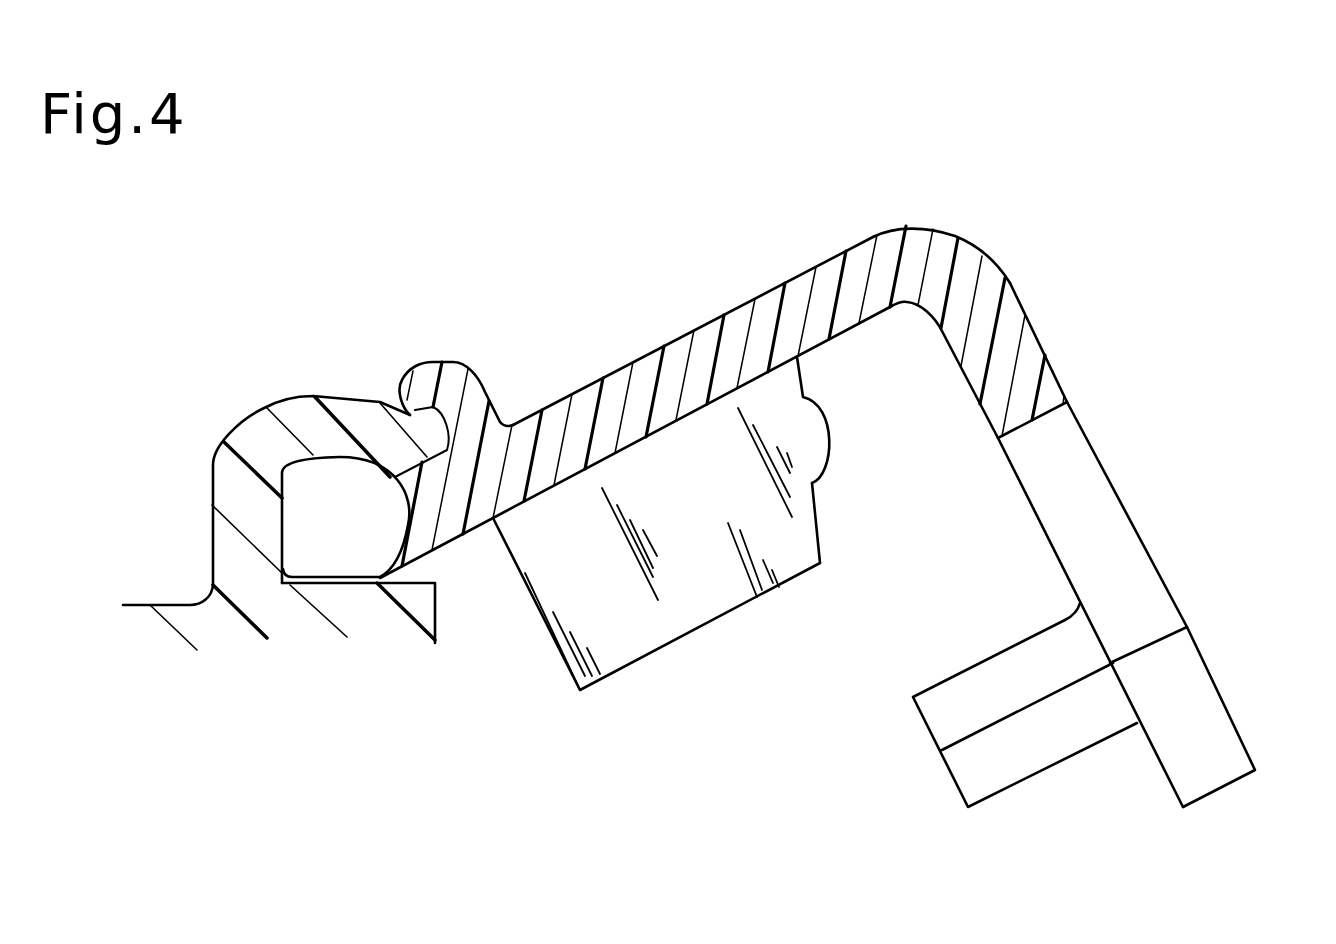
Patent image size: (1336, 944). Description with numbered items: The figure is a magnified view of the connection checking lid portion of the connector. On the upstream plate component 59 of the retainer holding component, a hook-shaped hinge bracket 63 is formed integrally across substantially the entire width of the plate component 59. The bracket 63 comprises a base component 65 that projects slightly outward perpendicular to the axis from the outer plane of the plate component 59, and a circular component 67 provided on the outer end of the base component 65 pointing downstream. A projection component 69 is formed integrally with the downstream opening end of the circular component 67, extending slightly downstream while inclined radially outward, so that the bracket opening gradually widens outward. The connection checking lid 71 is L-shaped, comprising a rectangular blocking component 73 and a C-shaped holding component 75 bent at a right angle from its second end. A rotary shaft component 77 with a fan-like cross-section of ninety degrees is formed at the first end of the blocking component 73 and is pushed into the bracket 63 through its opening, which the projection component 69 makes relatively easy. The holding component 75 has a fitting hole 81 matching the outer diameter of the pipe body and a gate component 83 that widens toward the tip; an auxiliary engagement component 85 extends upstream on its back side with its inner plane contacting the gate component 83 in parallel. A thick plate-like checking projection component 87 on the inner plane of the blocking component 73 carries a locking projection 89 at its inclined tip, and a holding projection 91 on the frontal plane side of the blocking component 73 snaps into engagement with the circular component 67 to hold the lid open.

The plate component 59 is at (375, 623).
The bracket 63 is at (224, 385).
The base component 65 is at (237, 543).
The circular component 67 is at (333, 432).
The projection component 69 is at (425, 430).
The connection checking lid 71 is at (1060, 248).
The blocking component 73 is at (752, 297).
The holding component 75 is at (1005, 352).
The rotary shaft component 77 is at (340, 538).
The fitting hole 81 is at (1095, 537).
The gate component 83 is at (1182, 723).
The auxiliary engagement component 85 is at (1013, 705).
The checking projection component 87 is at (702, 487).
The locking projection 89 is at (818, 442).
The holding projection 91 is at (427, 382).